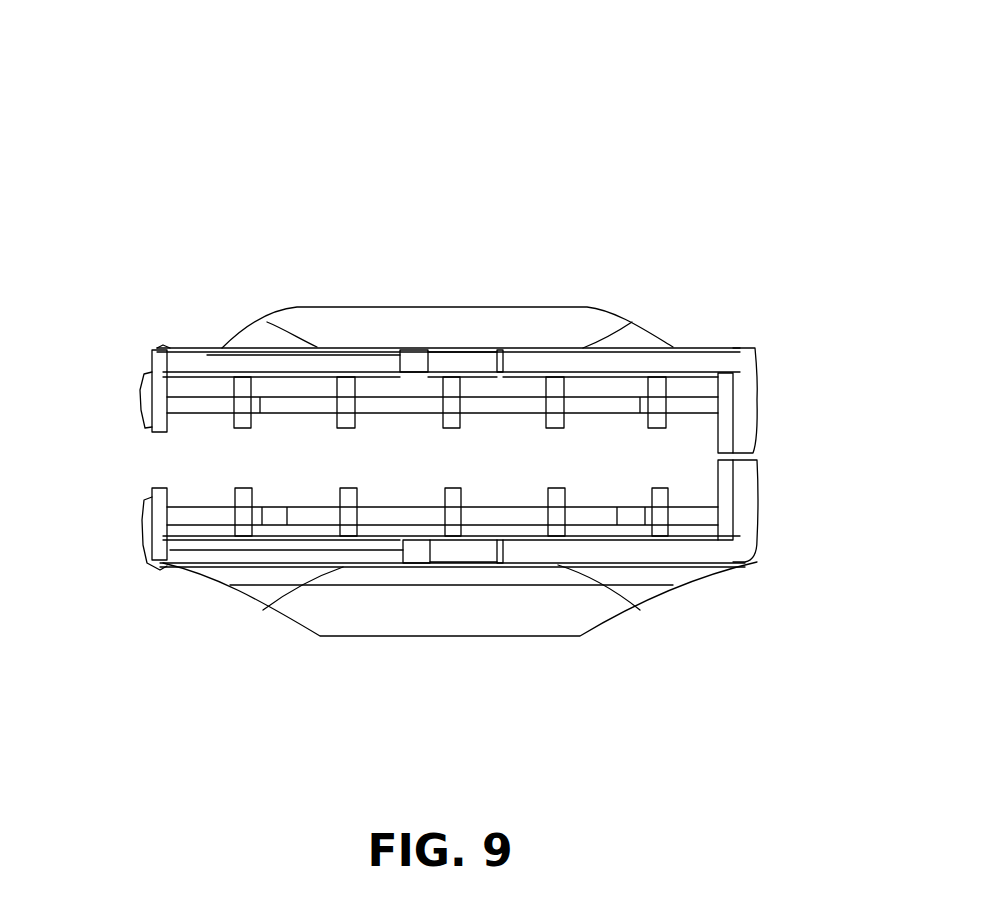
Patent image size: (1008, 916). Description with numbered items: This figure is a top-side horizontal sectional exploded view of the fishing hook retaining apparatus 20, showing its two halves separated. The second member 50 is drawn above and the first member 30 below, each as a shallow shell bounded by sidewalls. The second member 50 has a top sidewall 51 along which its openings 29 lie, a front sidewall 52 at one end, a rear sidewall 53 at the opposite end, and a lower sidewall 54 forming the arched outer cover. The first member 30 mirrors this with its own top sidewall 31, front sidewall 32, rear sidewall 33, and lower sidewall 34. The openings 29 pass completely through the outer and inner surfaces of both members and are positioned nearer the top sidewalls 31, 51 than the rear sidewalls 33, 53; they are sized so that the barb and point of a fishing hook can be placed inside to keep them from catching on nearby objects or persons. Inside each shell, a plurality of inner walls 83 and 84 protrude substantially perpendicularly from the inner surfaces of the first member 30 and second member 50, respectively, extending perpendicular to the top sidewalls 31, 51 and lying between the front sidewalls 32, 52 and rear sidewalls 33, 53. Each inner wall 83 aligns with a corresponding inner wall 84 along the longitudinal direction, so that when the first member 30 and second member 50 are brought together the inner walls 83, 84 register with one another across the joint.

The fishing hook retaining apparatus 20 is at (230, 210).
The openings 29 is at (467, 553).
The first member 30 is at (484, 672).
The top sidewall 31 is at (282, 555).
The front sidewall 32 is at (143, 527).
The rear sidewall 33 is at (758, 507).
The lower sidewall 34 is at (405, 637).
The second member 50 is at (525, 258).
The top sidewall 51 is at (262, 362).
The front sidewall 52 is at (138, 400).
The rear sidewall 53 is at (757, 408).
The lower sidewall 54 is at (354, 307).
The inner walls 83 is at (556, 508).
The inner walls 84 is at (555, 410).